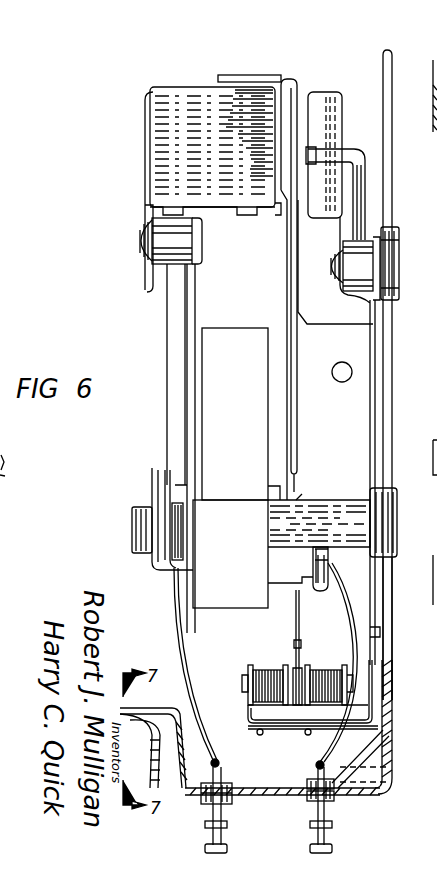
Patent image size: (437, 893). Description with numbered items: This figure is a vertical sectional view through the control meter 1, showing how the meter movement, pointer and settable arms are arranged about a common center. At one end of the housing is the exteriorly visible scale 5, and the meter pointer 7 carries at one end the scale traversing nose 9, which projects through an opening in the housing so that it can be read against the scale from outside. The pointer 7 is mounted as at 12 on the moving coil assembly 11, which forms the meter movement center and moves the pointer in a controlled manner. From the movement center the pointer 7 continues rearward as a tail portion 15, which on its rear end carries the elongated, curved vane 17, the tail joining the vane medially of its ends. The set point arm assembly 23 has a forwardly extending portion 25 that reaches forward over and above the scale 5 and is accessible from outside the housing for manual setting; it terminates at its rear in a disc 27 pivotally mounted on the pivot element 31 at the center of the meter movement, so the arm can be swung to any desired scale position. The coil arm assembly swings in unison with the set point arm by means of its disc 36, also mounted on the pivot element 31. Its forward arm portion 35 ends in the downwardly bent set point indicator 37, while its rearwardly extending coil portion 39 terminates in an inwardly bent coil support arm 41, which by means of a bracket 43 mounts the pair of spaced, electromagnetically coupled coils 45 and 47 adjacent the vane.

The control meter 1 is at (148, 461).
The scale 5 is at (254, 118).
The meter pointer 7 is at (299, 444).
The scale traversing nose 9 is at (272, 80).
The moving coil assembly 11 is at (349, 492).
The pointer mounting 12 is at (302, 494).
The tail portion 15 is at (300, 625).
The vane 17 is at (302, 663).
The set point arm assembly 23 is at (368, 434).
The forwardly extending portion 25 is at (393, 372).
The disc 27 is at (392, 602).
The pivot element 31 is at (384, 516).
The forward arm portion 35 is at (373, 320).
The disc 36 is at (373, 631).
The set point indicator 37 is at (310, 150).
The coil portion 39 is at (377, 661).
The coil support arm 41 is at (371, 771).
The bracket 43 is at (252, 712).
The coil 45 is at (255, 666).
The coil 47 is at (324, 670).